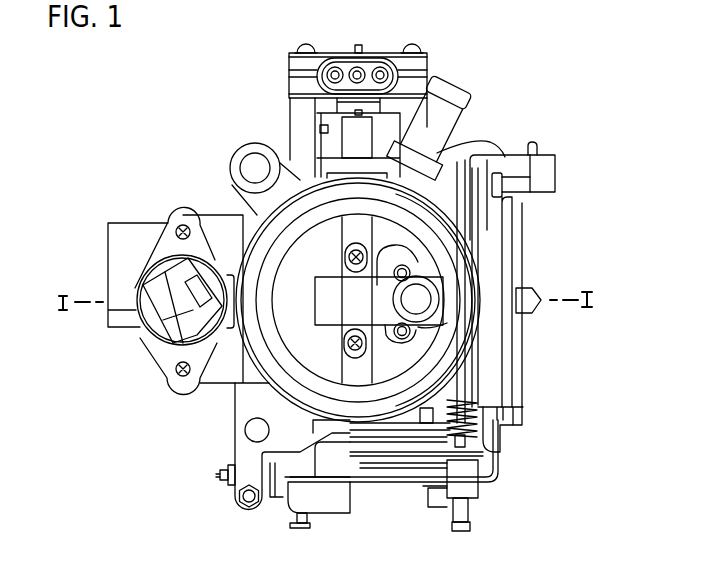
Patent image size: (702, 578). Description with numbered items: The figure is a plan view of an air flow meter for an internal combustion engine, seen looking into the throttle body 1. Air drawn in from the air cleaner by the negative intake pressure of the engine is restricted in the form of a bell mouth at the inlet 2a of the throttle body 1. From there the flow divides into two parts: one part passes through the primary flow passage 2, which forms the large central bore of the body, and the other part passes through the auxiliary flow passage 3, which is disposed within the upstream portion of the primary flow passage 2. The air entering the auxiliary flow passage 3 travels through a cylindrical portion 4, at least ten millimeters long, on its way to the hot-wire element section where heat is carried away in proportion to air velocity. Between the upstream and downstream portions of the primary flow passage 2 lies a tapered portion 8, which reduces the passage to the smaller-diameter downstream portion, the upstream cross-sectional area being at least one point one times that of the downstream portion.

The throttle body 1 is at (232, 192).
The primary flow passage 2 is at (294, 332).
The inlet 2a is at (288, 391).
The auxiliary flow passage 3 is at (422, 298).
The cylindrical portion 4 is at (378, 270).
The tapered portion 8 is at (445, 341).